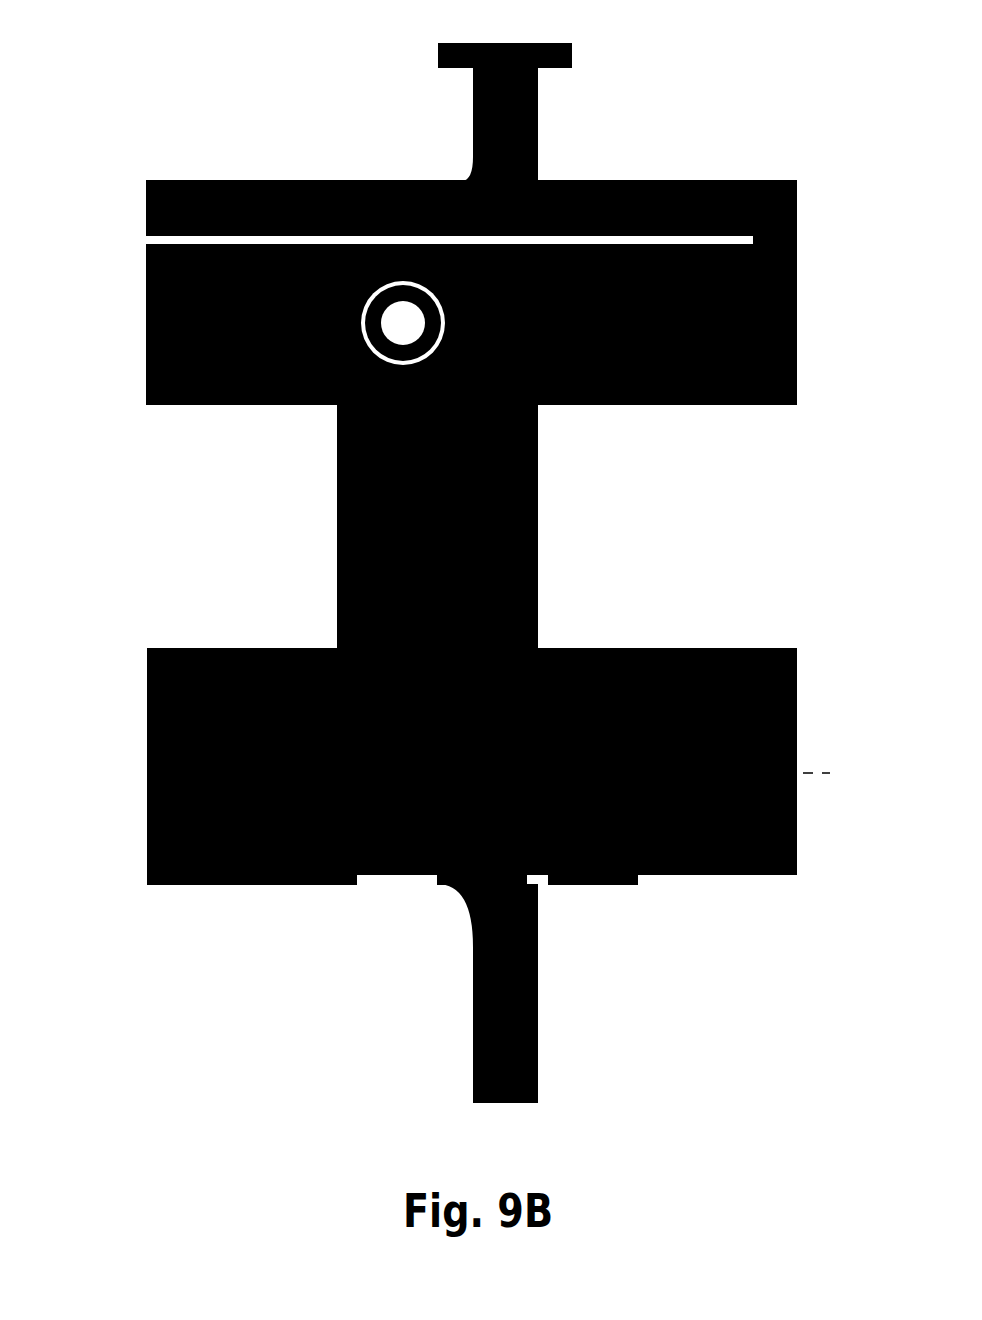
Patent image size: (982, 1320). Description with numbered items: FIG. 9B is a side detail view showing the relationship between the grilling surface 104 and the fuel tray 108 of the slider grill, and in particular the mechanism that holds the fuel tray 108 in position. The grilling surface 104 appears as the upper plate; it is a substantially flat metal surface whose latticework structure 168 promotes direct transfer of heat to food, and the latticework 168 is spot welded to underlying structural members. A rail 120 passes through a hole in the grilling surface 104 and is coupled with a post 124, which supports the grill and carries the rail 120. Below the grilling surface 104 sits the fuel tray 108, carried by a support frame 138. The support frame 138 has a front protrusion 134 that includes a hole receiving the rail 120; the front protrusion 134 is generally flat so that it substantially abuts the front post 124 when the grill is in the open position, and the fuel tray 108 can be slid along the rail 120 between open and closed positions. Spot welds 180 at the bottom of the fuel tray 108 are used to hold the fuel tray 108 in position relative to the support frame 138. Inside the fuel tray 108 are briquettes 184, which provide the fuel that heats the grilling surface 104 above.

The grilling surface 104 is at (158, 316).
The fuel tray 108 is at (160, 677).
The rail 120 is at (360, 333).
The post 124 is at (535, 158).
The front protrusion 134 is at (337, 502).
The support frame 138 is at (645, 893).
The latticework structure 168 is at (147, 239).
The spot weld 180 is at (536, 898).
The briquettes 184 is at (727, 876).